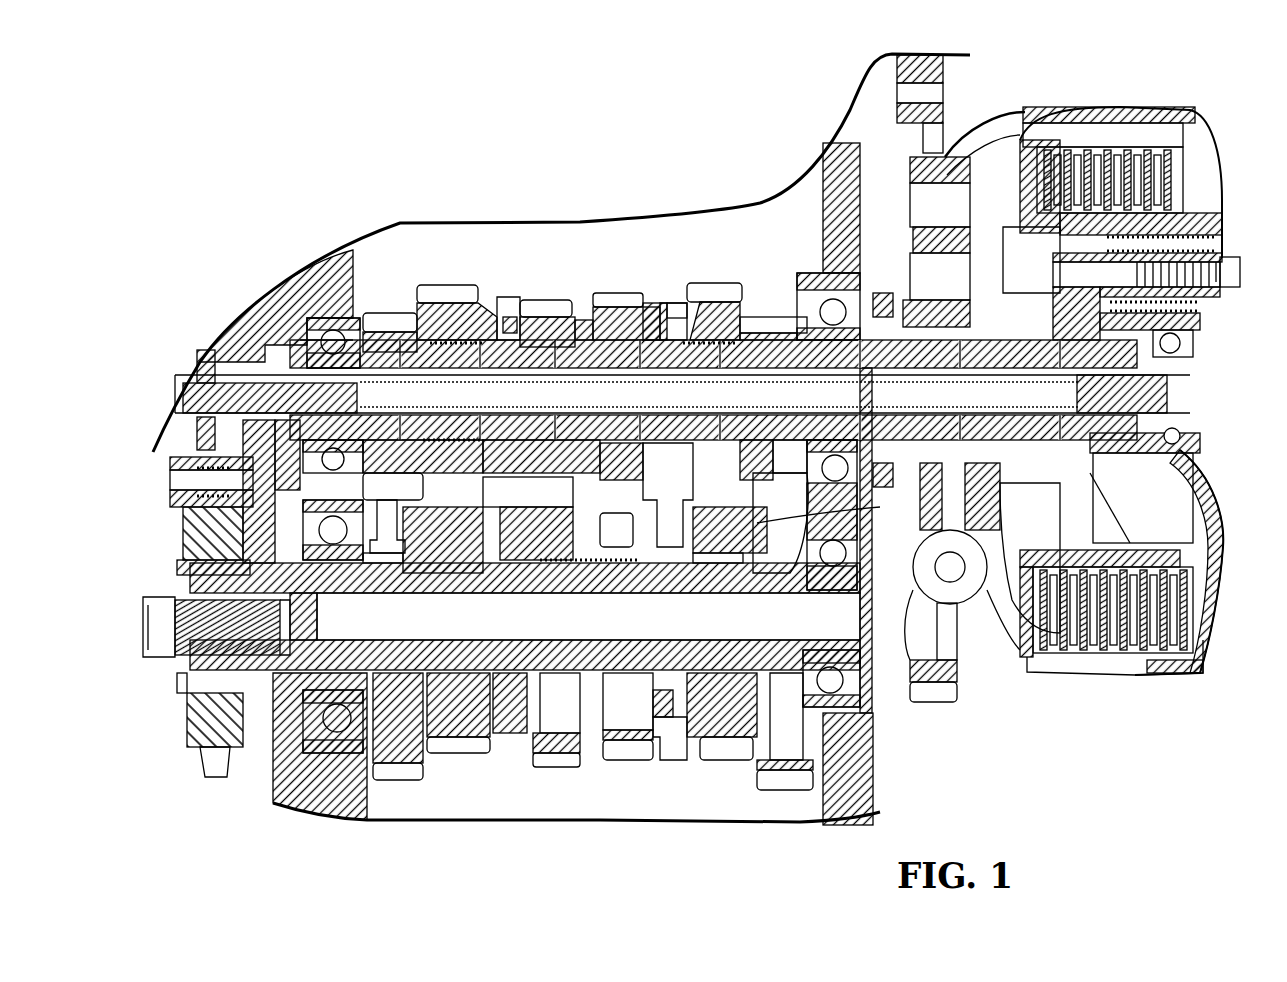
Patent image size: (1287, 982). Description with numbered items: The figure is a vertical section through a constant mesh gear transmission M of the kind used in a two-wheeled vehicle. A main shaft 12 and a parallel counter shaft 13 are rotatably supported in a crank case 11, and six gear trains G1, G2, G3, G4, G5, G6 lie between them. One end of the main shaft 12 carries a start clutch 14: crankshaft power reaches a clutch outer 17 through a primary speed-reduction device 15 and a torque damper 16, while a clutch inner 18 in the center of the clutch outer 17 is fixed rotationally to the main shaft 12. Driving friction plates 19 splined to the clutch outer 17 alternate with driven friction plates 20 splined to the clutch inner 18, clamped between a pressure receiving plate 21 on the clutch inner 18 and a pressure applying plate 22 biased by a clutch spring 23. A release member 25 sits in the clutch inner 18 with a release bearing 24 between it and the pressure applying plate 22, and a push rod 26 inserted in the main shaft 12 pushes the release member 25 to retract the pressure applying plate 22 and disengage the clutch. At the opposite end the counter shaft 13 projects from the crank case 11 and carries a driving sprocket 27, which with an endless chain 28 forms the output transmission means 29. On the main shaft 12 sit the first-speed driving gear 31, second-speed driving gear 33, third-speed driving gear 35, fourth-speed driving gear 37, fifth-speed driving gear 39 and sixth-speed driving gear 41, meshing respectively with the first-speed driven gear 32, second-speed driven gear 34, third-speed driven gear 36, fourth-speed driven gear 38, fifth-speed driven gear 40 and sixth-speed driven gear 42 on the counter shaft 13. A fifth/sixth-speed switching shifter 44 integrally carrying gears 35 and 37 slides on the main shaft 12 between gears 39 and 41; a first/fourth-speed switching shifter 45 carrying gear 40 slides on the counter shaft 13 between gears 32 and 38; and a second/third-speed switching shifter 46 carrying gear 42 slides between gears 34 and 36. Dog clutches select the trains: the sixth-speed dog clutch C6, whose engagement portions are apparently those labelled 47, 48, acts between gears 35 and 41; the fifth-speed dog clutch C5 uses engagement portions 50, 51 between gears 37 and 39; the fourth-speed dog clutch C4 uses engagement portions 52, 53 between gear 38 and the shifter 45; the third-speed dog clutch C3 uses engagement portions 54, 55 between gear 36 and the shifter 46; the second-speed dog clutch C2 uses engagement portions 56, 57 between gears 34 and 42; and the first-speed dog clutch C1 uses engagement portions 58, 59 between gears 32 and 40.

The crank case 11 is at (862, 797).
The main shaft 12 is at (623, 353).
The counter shaft 13 is at (270, 687).
The start clutch 14 is at (1207, 143).
The primary speed-reduction device 15 is at (948, 92).
The torque damper 16 is at (962, 595).
The clutch outer 17 is at (1023, 140).
The clutch inner 18 is at (1127, 543).
The driving friction plates 19 is at (1095, 650).
The driven friction plates 20 is at (1107, 147).
The pressure receiving plate 21 is at (1007, 557).
The pressure applying plate 22 is at (1223, 540).
The clutch spring 23 is at (1213, 307).
The release bearing 24 is at (1181, 437).
The release member 25 is at (1175, 387).
The push rod 26 is at (903, 333).
The driving sprocket 27 is at (183, 530).
The endless chain 28 is at (175, 470).
The transmission means 29 is at (190, 755).
The first-speed driving gear 31 is at (770, 323).
The first-speed driven gear 32 is at (770, 785).
The second-speed driving gear 33 is at (394, 317).
The second-speed driven gear 34 is at (397, 773).
The third-speed driving gear 35 is at (545, 303).
The third-speed driven gear 36 is at (557, 768).
The fourth-speed driving gear 37 is at (600, 300).
The fourth-speed driven gear 38 is at (647, 762).
The fifth-speed driving gear 39 is at (730, 287).
The fifth-speed driven gear 40 is at (723, 752).
The sixth-speed driving gear 41 is at (427, 287).
The sixth-speed driven gear 42 is at (450, 747).
The fifth/sixth-speed switching shifter 44 is at (581, 337).
The first/fourth-speed switching shifter 45 is at (687, 547).
The second/third-speed switching shifter 46 is at (497, 715).
The synchronizer ring 47 is at (507, 317).
The synchronizer sleeve 48 is at (490, 307).
The engagement portion 50 is at (652, 305).
The engagement portion 51 is at (668, 303).
The engagement portion 52 is at (651, 560).
The engagement portion 53 is at (621, 555).
The engagement portion 54 is at (587, 565).
The engagement portion 55 is at (545, 563).
The engagement portion 56 is at (370, 553).
The engagement portion 57 is at (390, 570).
The engagement portion 58 is at (783, 563).
The engagement portion 59 is at (831, 507).
The constant mesh gear transmission M is at (737, 253).
The first-speed gear train G1 is at (794, 802).
The second-speed gear train G2 is at (373, 298).
The third-speed gear train G3 is at (560, 287).
The fourth-speed gear train G4 is at (620, 768).
The fifth-speed gear train G5 is at (707, 280).
The sixth-speed gear train G6 is at (466, 765).
The first-speed dog clutch C1 is at (747, 560).
The second-speed dog clutch C2 is at (420, 553).
The third-speed dog clutch C3 is at (521, 502).
The fourth-speed dog clutch C4 is at (670, 742).
The fifth-speed dog clutch C5 is at (660, 287).
The sixth-speed dog clutch C6 is at (498, 296).